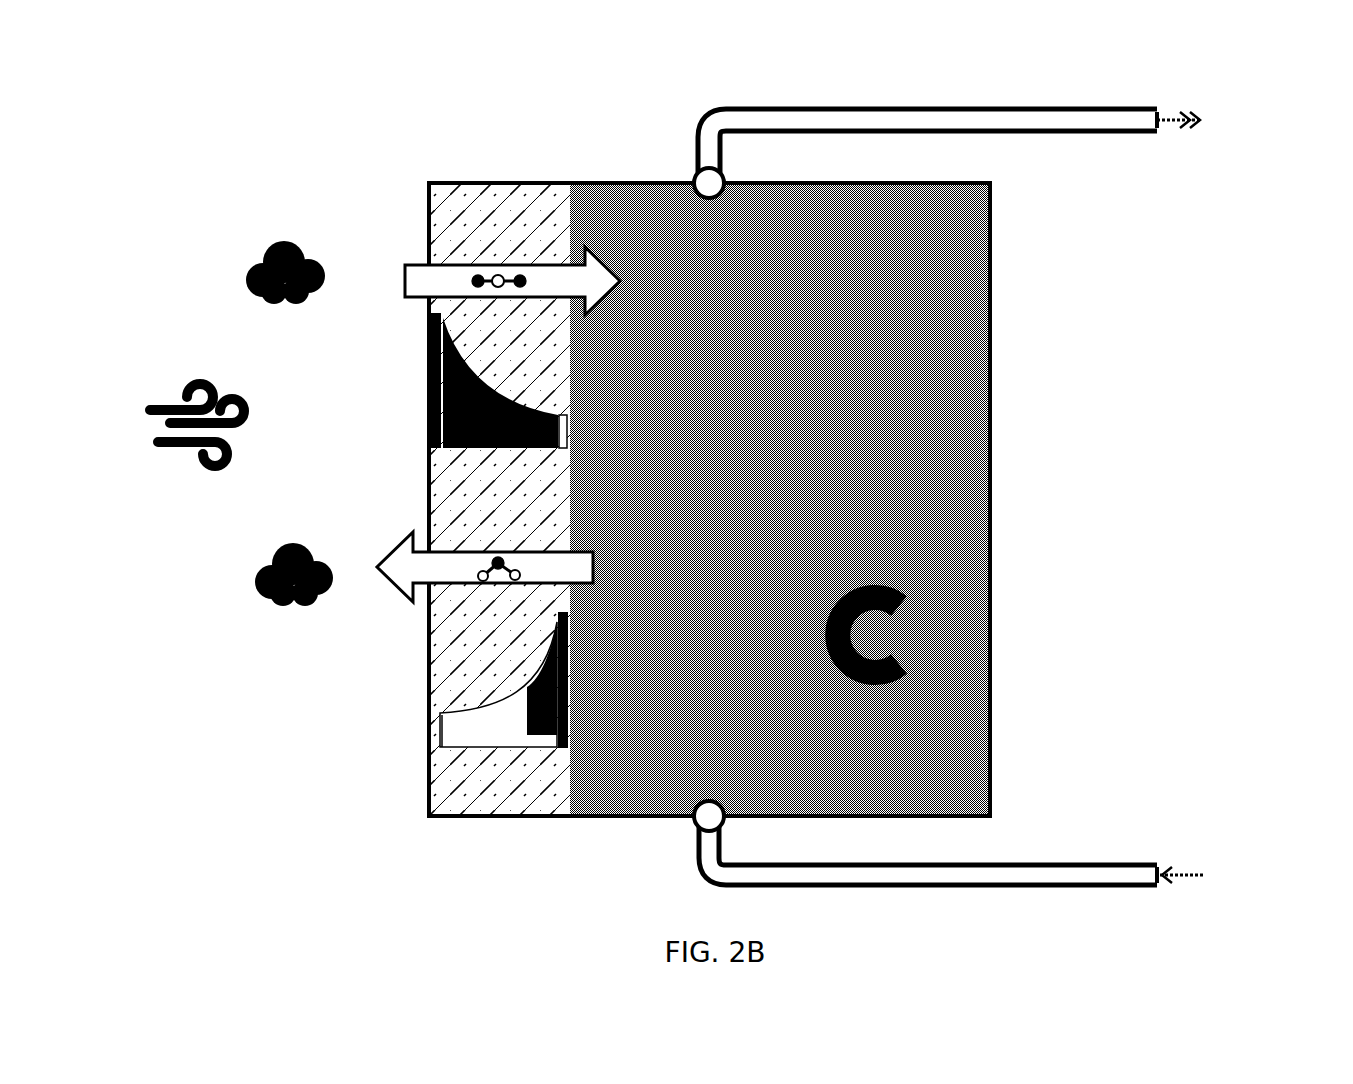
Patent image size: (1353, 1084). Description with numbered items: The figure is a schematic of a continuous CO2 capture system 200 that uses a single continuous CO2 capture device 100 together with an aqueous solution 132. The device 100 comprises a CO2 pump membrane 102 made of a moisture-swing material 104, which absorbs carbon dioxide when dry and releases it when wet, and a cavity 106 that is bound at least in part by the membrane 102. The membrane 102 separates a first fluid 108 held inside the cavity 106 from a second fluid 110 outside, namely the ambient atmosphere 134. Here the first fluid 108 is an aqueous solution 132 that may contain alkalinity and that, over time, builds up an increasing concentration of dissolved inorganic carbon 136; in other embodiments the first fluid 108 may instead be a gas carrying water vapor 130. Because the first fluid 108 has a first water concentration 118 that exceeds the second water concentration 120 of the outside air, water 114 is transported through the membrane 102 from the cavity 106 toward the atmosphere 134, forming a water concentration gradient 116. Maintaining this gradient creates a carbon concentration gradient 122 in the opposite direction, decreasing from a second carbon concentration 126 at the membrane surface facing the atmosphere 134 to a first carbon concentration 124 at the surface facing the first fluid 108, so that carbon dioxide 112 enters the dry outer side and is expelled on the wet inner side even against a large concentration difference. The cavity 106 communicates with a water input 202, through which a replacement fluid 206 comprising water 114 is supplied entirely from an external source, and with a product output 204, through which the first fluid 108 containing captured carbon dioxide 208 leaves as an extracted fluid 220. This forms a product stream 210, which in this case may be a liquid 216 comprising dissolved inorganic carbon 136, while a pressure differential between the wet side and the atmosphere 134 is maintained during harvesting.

The continuous CO2 capture device 100 is at (581, 117).
The CO2 pump membrane 102 is at (490, 218).
The moisture-swing material 104 is at (516, 517).
The cavity 106 is at (790, 454).
The first fluid 108 is at (758, 477).
The second fluid 110 is at (134, 462).
The carbon dioxide 112 is at (258, 247).
The water 114 is at (520, 572).
The water concentration gradient 116 is at (516, 734).
The first water concentration 118 is at (570, 634).
The second water concentration 120 is at (437, 722).
The carbon concentration gradient 122 is at (492, 430).
The first carbon concentration 124 is at (565, 437).
The second carbon concentration 126 is at (432, 350).
The water vapor 130 is at (253, 585).
The aqueous solution 132 is at (940, 300).
The ambient atmosphere 134 is at (165, 408).
The dissolved inorganic carbon 136 is at (900, 690).
The continuous CO2 capture system 200 is at (1213, 259).
The water input 202 is at (700, 822).
The product output 204 is at (722, 183).
The replacement fluid 206 is at (913, 884).
The captured carbon dioxide 208 is at (910, 614).
The product stream 210 is at (1179, 140).
The liquid 216 is at (1010, 107).
The extracted fluid 220 is at (843, 118).